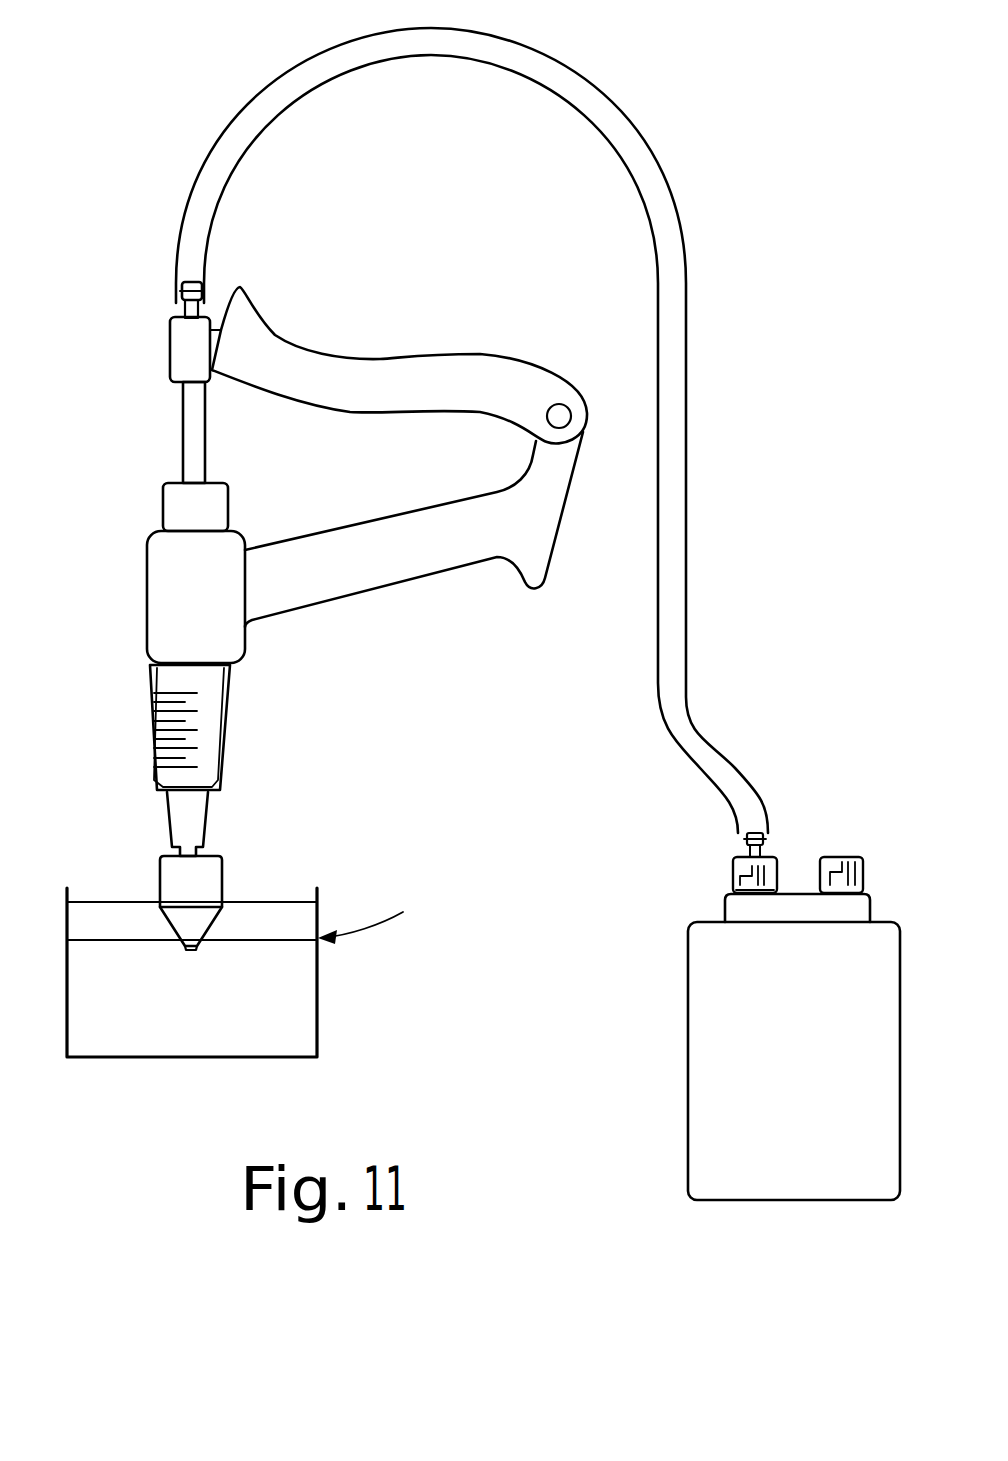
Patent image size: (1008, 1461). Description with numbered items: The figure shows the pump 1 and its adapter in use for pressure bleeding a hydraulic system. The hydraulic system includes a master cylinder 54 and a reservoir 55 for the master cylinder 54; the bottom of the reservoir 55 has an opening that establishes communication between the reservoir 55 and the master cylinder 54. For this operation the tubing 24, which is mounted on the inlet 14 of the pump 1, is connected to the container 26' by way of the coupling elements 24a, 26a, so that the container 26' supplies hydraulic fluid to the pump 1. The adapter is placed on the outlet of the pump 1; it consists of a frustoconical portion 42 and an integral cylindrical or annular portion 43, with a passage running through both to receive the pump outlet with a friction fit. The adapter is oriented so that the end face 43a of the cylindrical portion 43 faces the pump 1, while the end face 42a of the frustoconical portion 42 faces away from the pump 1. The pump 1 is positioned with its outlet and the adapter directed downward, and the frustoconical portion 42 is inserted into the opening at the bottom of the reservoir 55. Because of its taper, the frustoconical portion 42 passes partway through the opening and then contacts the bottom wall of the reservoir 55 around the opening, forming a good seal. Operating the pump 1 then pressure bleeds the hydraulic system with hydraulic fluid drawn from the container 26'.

The pump 1 is at (331, 623).
The inlet 14 is at (180, 293).
The tubing 24 is at (665, 163).
The coupling element 24a is at (732, 875).
The coupling element 26a is at (662, 855).
The container 26' is at (677, 1061).
The frustoconical portion 42 is at (210, 923).
The end face 42a is at (200, 948).
The cylindrical portion 43 is at (160, 885).
The end face 43a is at (165, 856).
The master cylinder 54 is at (318, 1040).
The reservoir 55 is at (319, 912).